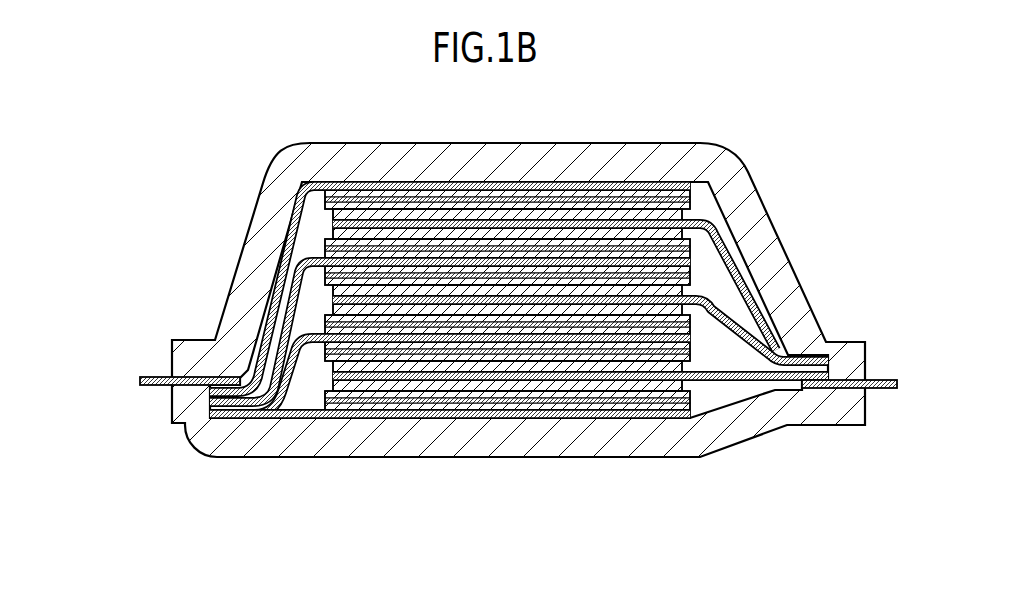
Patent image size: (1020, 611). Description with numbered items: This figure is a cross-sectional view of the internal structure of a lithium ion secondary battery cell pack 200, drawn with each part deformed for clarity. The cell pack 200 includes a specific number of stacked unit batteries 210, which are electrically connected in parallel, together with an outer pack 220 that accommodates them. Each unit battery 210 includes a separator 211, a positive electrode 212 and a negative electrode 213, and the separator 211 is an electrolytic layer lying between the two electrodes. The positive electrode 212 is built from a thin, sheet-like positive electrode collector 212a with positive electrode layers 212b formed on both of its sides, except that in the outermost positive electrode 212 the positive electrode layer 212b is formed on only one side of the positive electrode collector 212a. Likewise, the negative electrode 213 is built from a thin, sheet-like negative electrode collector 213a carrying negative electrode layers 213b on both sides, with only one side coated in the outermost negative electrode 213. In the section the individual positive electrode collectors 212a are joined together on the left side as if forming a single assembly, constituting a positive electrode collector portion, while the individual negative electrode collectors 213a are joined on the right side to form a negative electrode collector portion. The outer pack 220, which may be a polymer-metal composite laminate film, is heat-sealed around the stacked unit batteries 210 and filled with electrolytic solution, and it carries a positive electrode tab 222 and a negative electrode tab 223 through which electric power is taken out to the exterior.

The lithium ion secondary battery cell pack 200 is at (722, 124).
The unit battery 210 is at (446, 295).
The separator 211 is at (328, 253).
The positive electrode 212 is at (400, 206).
The positive electrode collector 212a is at (327, 213).
The positive electrode layer 212b is at (323, 205).
The negative electrode 213 is at (400, 296).
The negative electrode collector 213a is at (337, 293).
The negative electrode layer 213b is at (335, 276).
The outer pack 220 is at (848, 341).
The positive electrode tab 222 is at (148, 377).
The negative electrode tab 223 is at (882, 380).